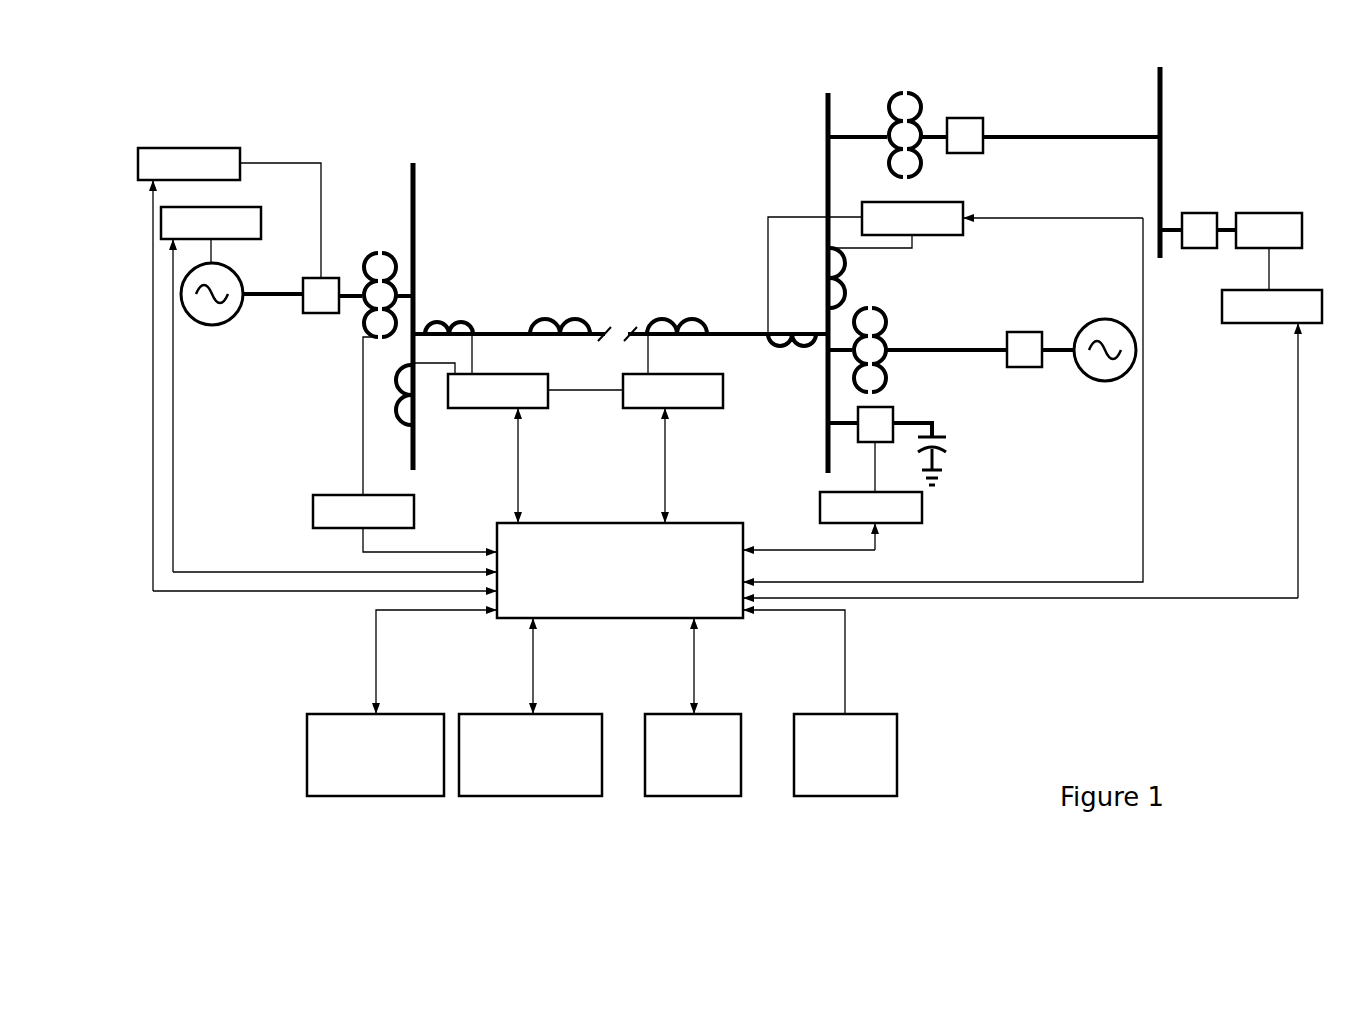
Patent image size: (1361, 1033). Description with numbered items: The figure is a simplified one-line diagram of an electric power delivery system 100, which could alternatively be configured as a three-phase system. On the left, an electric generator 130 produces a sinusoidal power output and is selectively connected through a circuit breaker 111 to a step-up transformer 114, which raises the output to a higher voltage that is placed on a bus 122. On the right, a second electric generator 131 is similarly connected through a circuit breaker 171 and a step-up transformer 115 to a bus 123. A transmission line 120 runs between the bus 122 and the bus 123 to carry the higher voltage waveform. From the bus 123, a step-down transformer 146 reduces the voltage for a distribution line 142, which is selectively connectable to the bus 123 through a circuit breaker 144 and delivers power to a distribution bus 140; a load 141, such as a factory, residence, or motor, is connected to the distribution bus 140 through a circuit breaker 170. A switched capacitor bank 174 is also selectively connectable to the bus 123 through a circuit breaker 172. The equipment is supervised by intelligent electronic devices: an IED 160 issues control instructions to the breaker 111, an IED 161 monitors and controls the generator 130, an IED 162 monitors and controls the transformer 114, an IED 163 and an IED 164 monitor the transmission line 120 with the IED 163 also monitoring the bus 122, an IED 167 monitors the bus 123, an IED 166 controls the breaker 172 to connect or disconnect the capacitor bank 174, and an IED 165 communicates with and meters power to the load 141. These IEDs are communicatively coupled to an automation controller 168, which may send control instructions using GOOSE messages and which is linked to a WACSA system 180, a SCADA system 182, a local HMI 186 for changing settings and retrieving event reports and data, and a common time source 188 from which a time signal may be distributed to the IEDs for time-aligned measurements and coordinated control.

The electric power delivery system 100 is at (602, 142).
The circuit breaker 111 is at (318, 316).
The step-up transformer 114 is at (388, 251).
The step-up transformer 115 is at (887, 309).
The transmission line 120 is at (500, 328).
The bus 122 is at (415, 192).
The bus 123 is at (825, 408).
The electric generator 130 is at (232, 269).
The electric generator 131 is at (1105, 381).
The distribution bus 140 is at (1162, 147).
The load 141 is at (1270, 213).
The distribution line 142 is at (1057, 132).
The circuit breaker 144 is at (962, 118).
The step-down transformer 146 is at (904, 97).
The IED 160 is at (202, 148).
The IED 161 is at (241, 207).
The IED 162 is at (338, 495).
The IED 163 is at (496, 411).
The IED 164 is at (646, 411).
The IED 165 is at (1227, 324).
The IED 166 is at (820, 497).
The IED 167 is at (912, 201).
The automation controller 168 is at (620, 570).
The circuit breaker 170 is at (1198, 212).
The circuit breaker 171 is at (1020, 333).
The circuit breaker 172 is at (887, 408).
The switched capacitor bank 174 is at (934, 437).
The wide area control and situational awareness system 180 is at (397, 797).
The SCADA system 182 is at (509, 797).
The local human machine interface 186 is at (733, 797).
The common time source 188 is at (846, 797).